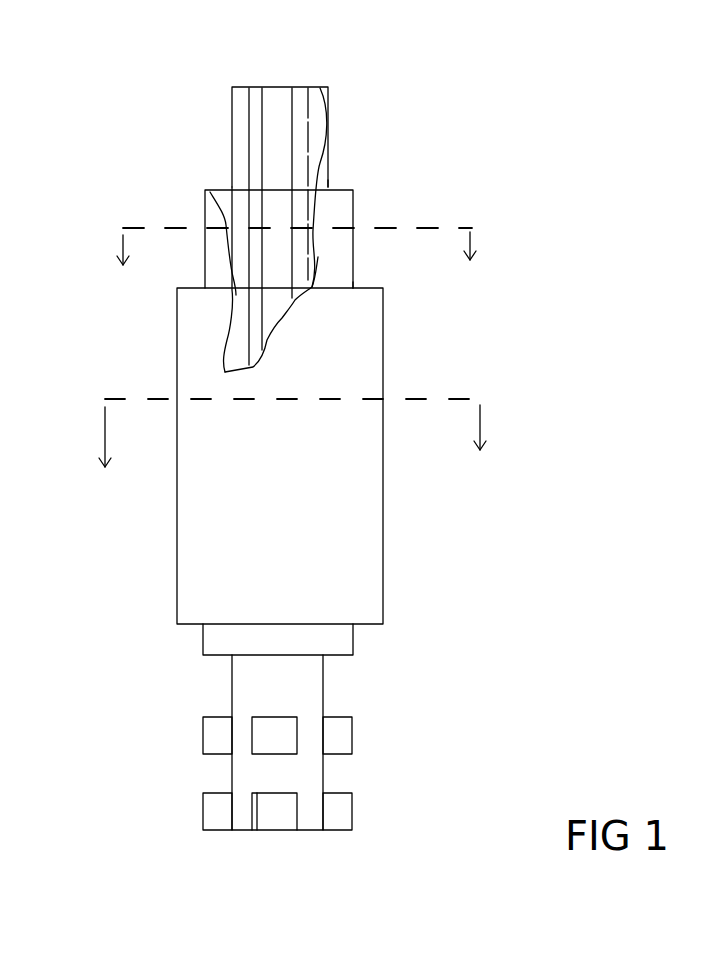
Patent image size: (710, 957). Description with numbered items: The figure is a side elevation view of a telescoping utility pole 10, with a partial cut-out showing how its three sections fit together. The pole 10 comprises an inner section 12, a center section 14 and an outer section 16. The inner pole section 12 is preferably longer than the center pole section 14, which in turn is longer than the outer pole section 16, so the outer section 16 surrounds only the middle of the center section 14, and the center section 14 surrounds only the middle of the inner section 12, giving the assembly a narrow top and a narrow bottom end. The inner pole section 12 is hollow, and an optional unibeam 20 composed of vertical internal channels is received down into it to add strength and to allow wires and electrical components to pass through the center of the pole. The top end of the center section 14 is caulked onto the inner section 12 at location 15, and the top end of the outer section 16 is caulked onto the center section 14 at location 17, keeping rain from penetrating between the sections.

The utility pole 10 is at (540, 323).
The inner pole section 12 is at (232, 137).
The center pole section 14 is at (205, 250).
The location 15 is at (367, 158).
The outer pole section 16 is at (177, 348).
The location 17 is at (358, 277).
The unibeam section 20 is at (292, 98).